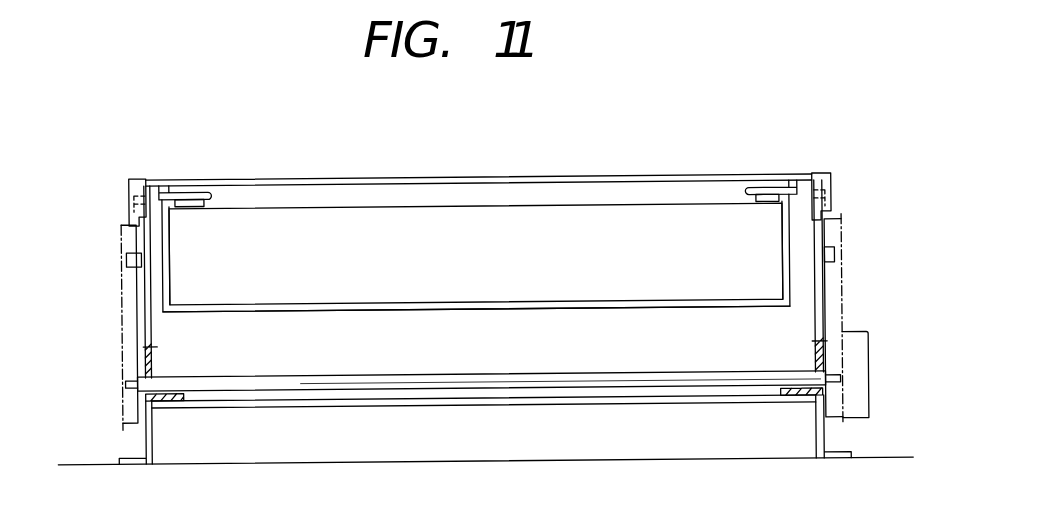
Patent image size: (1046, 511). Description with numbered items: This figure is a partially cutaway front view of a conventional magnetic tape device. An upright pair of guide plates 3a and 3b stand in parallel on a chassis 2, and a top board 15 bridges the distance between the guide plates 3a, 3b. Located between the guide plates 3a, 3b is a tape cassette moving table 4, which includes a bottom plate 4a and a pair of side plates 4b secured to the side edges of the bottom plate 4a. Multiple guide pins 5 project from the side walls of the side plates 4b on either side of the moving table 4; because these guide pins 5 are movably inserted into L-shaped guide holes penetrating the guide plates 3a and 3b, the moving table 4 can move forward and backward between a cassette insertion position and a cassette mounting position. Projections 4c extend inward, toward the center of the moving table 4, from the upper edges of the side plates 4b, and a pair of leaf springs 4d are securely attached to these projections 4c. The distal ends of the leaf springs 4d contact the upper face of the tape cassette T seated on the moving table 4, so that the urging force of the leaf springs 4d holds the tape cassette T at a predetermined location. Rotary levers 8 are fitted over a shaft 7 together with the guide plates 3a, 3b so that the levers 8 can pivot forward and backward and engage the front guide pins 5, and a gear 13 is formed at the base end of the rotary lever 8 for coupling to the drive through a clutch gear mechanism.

The chassis 2 is at (470, 402).
The guide plate 3a is at (826, 188).
The guide plate 3b is at (132, 190).
The tape cassette moving table 4 is at (476, 280).
The bottom plate 4a is at (460, 312).
The side plate 4b is at (172, 290).
The projection 4c is at (195, 197).
The leaf spring 4d is at (190, 207).
The guide pin 5 is at (142, 208).
The shaft 7 is at (610, 384).
The rotary lever 8 is at (128, 236).
The gear 13 is at (868, 385).
The top board 15 is at (379, 180).
The tape cassette T is at (530, 220).